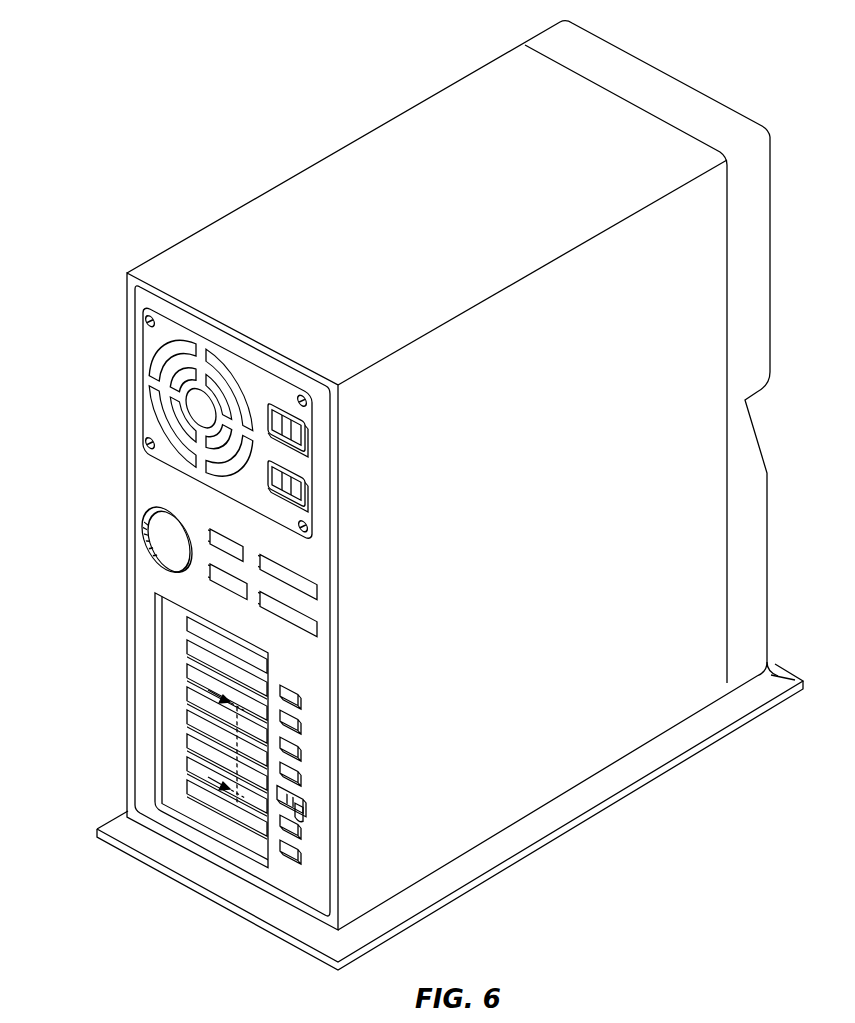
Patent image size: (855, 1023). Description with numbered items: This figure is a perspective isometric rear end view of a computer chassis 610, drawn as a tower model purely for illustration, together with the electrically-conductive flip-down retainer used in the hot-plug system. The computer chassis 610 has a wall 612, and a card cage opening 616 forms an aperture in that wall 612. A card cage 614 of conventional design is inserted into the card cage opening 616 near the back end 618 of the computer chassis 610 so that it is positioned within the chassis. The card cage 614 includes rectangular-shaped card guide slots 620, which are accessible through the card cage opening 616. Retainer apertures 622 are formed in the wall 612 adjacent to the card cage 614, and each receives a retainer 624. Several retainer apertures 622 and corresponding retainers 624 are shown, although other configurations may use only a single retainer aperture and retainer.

The computer chassis 610 is at (340, 88).
The wall 612 is at (155, 483).
The card cage 614 is at (187, 641).
The card cage opening 616 is at (213, 838).
The back end 618 is at (102, 737).
The card guide slots 620 is at (190, 757).
The retainer apertures 622 is at (303, 698).
The retainer 624 is at (310, 815).